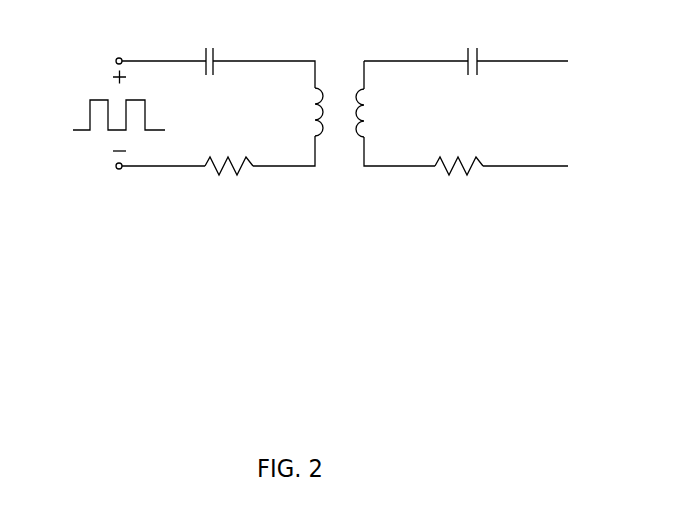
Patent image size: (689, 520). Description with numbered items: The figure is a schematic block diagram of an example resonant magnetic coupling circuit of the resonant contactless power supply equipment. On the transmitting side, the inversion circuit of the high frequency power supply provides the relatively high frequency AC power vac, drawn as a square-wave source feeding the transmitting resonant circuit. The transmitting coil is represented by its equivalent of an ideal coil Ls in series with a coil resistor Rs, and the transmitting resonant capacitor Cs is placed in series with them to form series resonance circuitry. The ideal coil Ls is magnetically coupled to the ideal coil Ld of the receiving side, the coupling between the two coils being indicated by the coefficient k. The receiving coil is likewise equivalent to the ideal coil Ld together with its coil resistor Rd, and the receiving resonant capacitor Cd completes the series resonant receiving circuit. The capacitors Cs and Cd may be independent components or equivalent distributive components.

The high frequency AC power vac is at (106, 113).
The transmitting resonant capacitor Cs is at (209, 46).
The coil resistor Rs is at (229, 152).
The ideal coil Ls is at (302, 112).
The coupling coefficient k is at (335, 40).
The ideal coil Ld is at (372, 113).
The receiving resonant capacitor Cd is at (470, 46).
The coil resistor Rd is at (459, 152).